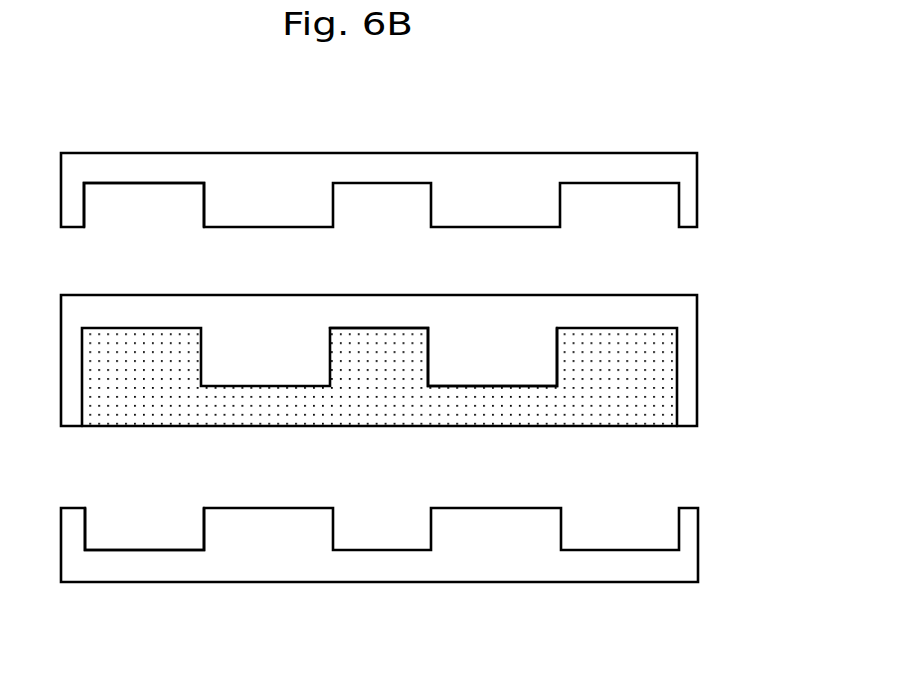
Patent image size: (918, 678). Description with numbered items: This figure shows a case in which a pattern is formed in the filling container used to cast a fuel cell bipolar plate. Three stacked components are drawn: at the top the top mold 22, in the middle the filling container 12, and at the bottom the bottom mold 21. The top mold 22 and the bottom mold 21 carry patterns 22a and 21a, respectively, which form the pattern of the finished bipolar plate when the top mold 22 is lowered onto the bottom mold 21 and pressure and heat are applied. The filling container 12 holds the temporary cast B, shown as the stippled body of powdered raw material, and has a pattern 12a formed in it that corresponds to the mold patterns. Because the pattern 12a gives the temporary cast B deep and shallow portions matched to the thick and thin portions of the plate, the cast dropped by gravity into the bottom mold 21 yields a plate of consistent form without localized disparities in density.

The top mold 22 is at (187, 150).
The pattern of the top mold 22a is at (140, 183).
The filling container 12 is at (633, 302).
The pattern of the filling container 12a is at (425, 360).
The temporary cast B is at (493, 413).
The bottom mold 21 is at (126, 582).
The pattern of the bottom mold 21a is at (125, 547).